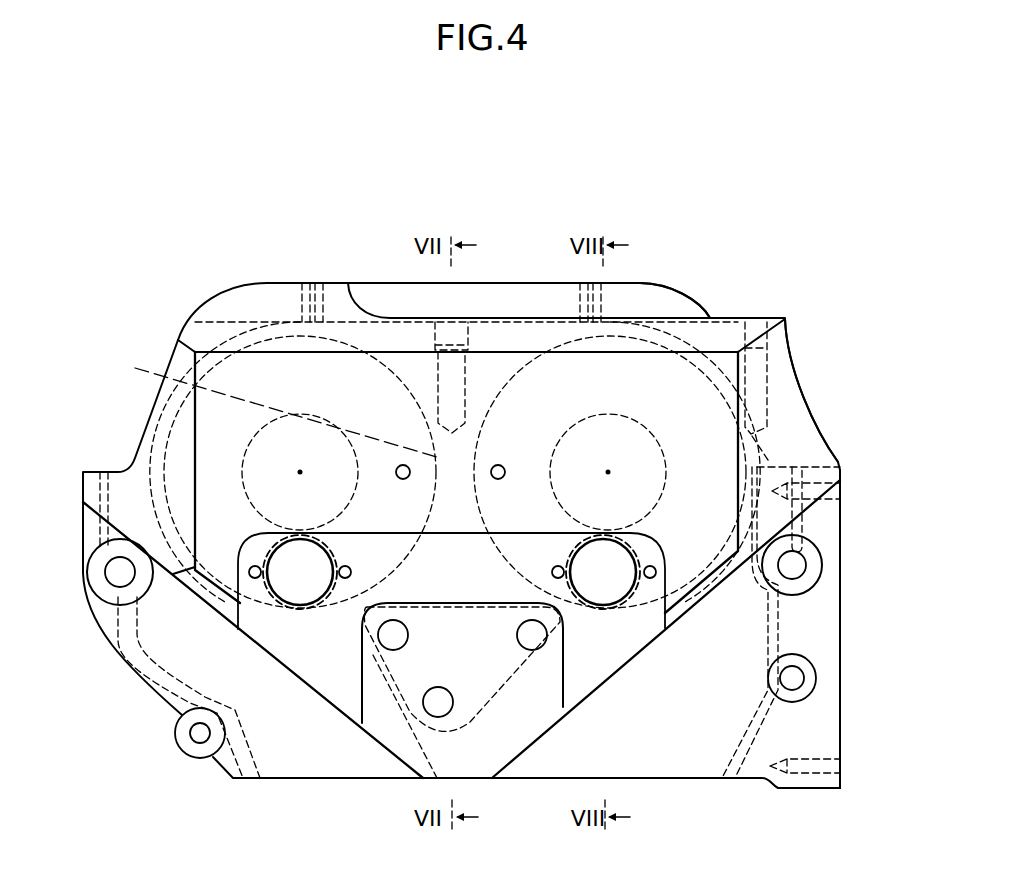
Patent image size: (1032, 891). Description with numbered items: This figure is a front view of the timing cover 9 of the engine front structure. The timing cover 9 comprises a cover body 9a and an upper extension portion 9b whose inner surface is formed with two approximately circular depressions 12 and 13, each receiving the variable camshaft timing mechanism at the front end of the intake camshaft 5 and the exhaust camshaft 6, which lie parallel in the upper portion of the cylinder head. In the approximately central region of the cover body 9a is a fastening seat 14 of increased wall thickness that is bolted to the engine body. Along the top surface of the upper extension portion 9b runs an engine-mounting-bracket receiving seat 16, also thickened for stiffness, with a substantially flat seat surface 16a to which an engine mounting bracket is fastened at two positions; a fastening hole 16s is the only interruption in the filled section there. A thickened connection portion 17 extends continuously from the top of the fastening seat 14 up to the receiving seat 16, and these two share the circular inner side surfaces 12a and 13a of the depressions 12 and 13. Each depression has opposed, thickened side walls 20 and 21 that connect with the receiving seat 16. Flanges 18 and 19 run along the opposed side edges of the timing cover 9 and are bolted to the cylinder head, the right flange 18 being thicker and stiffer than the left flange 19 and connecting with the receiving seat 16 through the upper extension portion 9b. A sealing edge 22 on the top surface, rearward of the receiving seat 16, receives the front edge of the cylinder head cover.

The intake camshaft 5 is at (608, 472).
The exhaust camshaft 6 is at (300, 472).
The timing cover 9 is at (808, 352).
The cover body 9a is at (825, 700).
The upper extension portion 9b is at (815, 437).
The depression 12 is at (683, 388).
The circular shaped inner side surface 12a is at (507, 412).
The depression 13 is at (260, 367).
The circular shaped inner side surface 13a is at (405, 412).
The fastening seat 14 is at (412, 675).
The engine-mounting-bracket receiving seat 16 is at (516, 336).
The seat surface 16a is at (668, 318).
The fastening hole 16s is at (455, 340).
The connection portion 17 is at (266, 405).
The flange 18 is at (823, 532).
The flange 19 is at (93, 517).
The side wall 20 is at (770, 463).
The side wall 21 is at (150, 420).
The sealing edge 22 is at (378, 282).